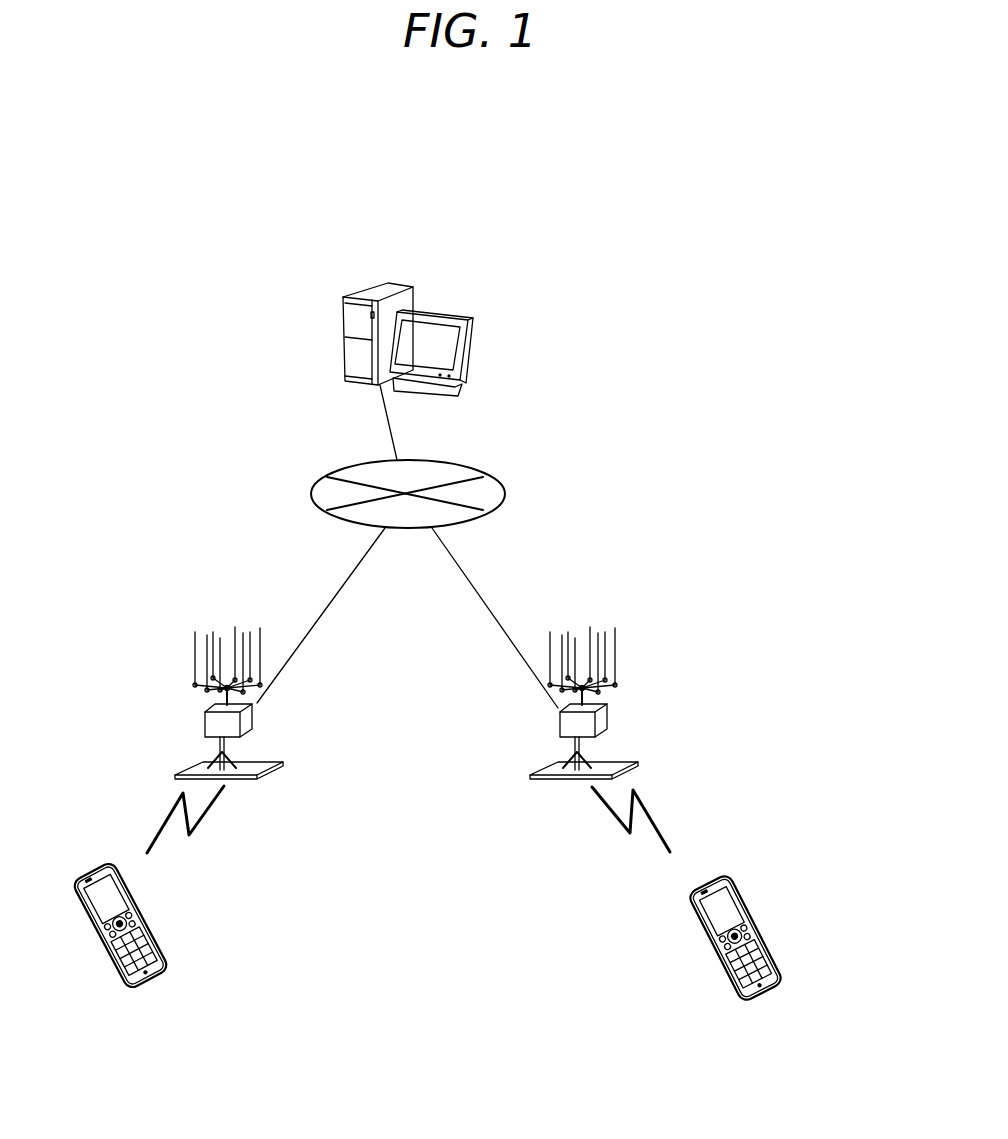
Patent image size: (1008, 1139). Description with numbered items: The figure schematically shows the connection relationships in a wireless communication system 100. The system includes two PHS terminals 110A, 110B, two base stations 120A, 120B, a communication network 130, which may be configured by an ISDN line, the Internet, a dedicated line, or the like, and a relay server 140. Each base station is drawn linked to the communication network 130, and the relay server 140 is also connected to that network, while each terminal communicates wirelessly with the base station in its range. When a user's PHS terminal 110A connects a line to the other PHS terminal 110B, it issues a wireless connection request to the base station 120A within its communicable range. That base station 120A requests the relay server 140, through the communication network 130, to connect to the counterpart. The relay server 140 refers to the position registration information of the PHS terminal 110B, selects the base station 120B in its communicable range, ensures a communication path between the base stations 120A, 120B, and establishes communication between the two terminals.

The wireless communication system 100 is at (553, 451).
The PHS terminal 110A is at (145, 912).
The PHS terminal 110B is at (760, 927).
The base station 120A is at (260, 766).
The base station 120B is at (615, 766).
The communication network 130 is at (312, 494).
The relay server 140 is at (402, 285).